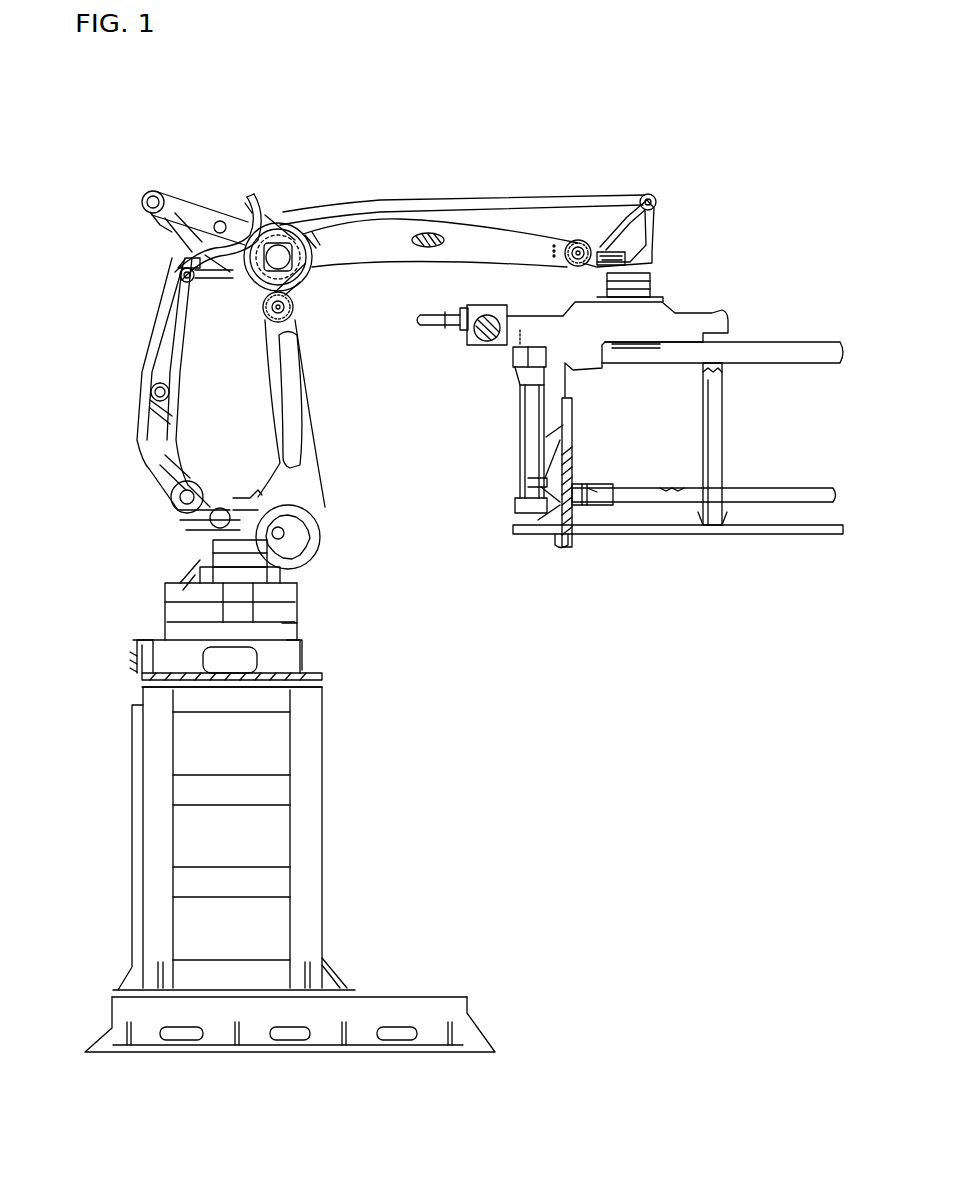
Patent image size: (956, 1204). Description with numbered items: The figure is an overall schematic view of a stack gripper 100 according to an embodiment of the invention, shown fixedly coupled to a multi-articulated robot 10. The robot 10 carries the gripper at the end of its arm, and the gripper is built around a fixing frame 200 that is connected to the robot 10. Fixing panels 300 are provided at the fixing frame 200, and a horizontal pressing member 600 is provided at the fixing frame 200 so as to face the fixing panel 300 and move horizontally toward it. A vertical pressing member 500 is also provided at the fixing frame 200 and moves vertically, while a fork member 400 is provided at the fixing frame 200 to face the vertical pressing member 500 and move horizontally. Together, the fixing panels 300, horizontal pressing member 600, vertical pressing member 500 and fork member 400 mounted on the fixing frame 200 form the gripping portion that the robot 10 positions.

The multi-articulated robot 10 is at (123, 452).
The stack gripper 100 is at (742, 257).
The fixing frame 200 is at (513, 355).
The fixing panel 300 is at (572, 440).
The fork member 400 is at (832, 536).
The vertical pressing member 500 is at (762, 525).
The horizontal pressing member 600 is at (722, 428).